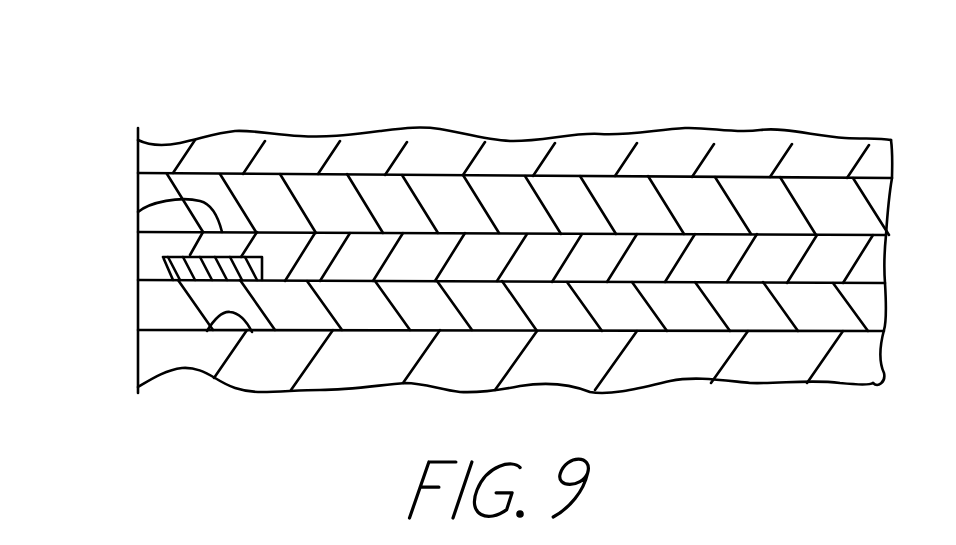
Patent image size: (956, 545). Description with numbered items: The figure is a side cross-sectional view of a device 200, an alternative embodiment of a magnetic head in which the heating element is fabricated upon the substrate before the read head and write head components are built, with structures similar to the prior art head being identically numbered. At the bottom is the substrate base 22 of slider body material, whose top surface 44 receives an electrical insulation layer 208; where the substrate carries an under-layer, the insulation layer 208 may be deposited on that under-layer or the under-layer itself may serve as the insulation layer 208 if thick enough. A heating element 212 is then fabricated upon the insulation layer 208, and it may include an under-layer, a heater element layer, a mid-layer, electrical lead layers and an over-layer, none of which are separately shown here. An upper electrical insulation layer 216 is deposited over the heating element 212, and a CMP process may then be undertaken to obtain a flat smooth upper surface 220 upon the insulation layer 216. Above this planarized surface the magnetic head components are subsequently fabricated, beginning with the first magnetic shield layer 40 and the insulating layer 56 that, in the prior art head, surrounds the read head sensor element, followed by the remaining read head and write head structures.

The device 200 is at (174, 52).
The insulating layer 56 is at (150, 144).
The first magnetic shield layer 40 is at (150, 189).
The flat smooth upper surface 220 is at (30, 216).
The upper electrical insulation layer 216 is at (162, 247).
The heating element 212 is at (207, 284).
The substrate base 22 is at (154, 333).
The top surface 44 is at (210, 331).
The electrical insulation layer 208 is at (293, 300).